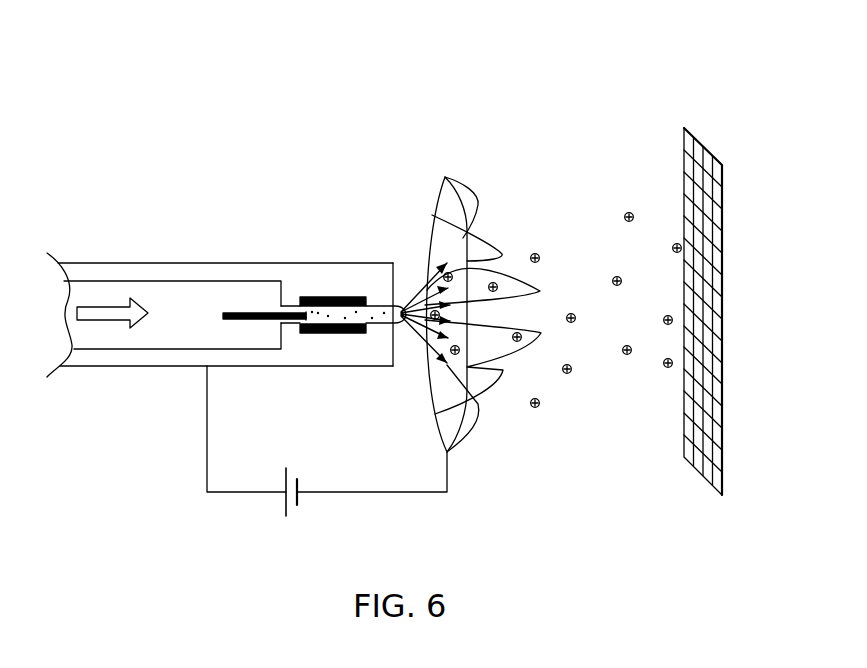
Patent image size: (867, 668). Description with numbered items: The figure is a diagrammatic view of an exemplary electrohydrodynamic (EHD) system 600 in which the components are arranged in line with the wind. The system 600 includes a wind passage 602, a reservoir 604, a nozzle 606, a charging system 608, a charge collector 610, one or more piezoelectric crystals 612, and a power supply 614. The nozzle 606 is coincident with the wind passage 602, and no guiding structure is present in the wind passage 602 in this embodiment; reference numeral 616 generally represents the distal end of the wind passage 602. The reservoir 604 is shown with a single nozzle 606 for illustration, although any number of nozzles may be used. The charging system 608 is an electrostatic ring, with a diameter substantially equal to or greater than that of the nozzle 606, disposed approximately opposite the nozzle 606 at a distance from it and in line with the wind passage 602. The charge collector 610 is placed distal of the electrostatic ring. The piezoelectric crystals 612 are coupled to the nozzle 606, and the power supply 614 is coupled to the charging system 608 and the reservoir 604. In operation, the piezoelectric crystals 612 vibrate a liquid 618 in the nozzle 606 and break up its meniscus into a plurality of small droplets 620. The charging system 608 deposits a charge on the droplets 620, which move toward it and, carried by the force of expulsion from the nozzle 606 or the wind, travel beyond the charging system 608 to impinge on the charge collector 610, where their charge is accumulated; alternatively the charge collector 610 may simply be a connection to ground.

The EHD system 600 is at (684, 56).
The wind passage 602 is at (110, 263).
The reservoir 604 is at (225, 281).
The nozzle 606 is at (290, 300).
The charging system 608 is at (447, 177).
The charge collector 610 is at (721, 200).
The piezoelectric crystals 612 is at (225, 313).
The power supply 614 is at (299, 483).
The distal end of the wind passage 616 is at (393, 275).
The liquid 618 is at (289, 326).
The droplets 620 is at (627, 212).